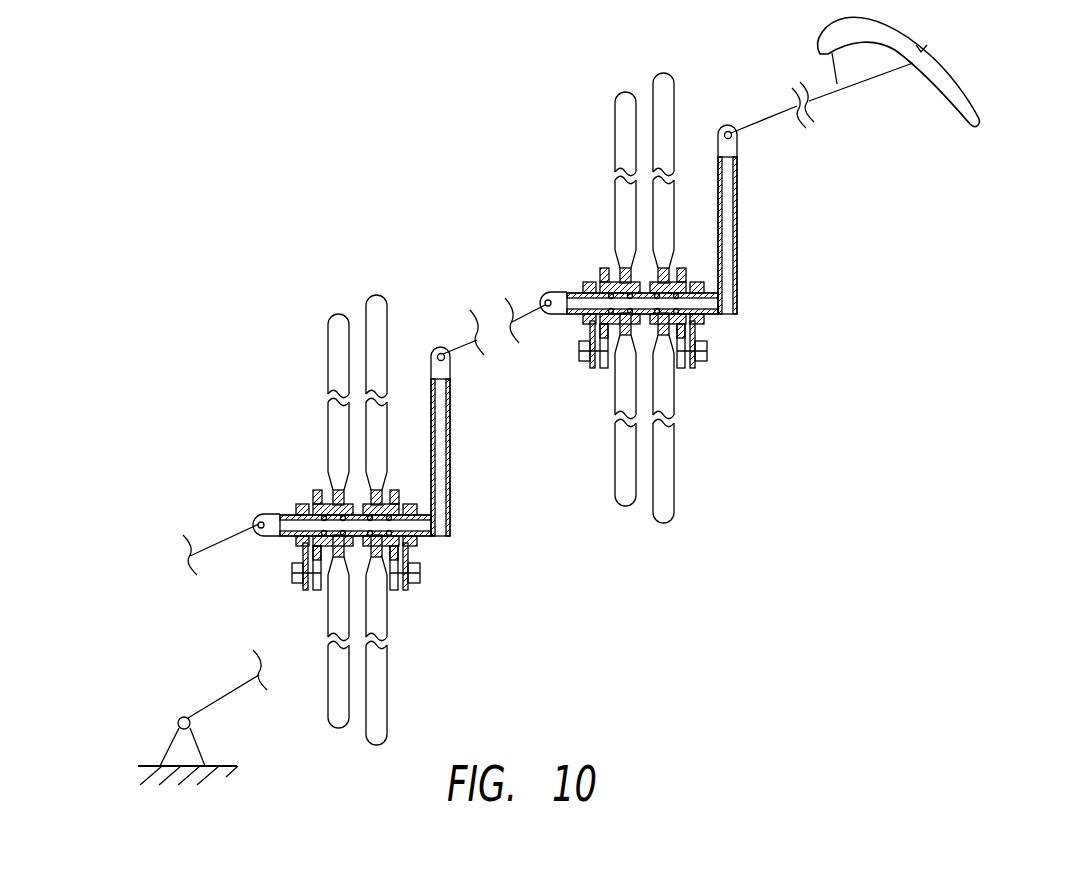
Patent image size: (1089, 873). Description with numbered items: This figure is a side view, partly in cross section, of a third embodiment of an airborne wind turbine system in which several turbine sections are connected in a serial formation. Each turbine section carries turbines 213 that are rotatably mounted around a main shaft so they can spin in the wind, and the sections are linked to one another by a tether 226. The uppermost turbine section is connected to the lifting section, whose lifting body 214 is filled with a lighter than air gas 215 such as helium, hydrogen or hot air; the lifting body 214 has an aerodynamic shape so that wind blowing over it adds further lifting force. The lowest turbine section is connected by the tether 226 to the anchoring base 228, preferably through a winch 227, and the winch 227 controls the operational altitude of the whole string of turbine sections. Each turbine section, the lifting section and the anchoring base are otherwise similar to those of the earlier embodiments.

The turbines 213 is at (657, 75).
The lifting body 214 is at (984, 101).
The lighter than air gas 215 is at (925, 45).
The tether 226 is at (530, 300).
The winch 227 is at (182, 716).
The anchoring base 228 is at (170, 747).